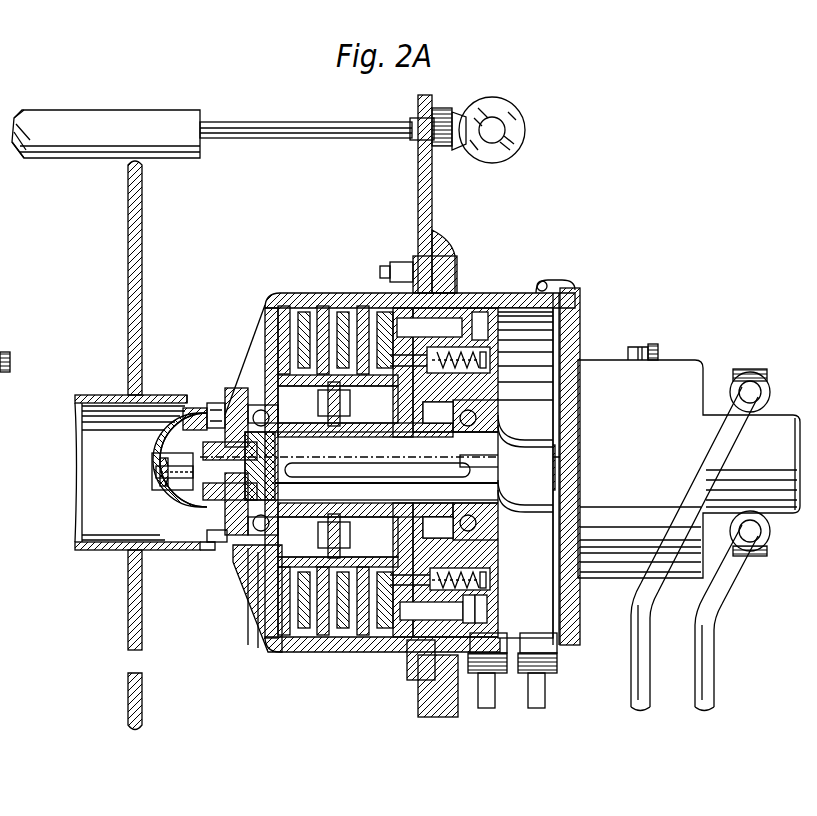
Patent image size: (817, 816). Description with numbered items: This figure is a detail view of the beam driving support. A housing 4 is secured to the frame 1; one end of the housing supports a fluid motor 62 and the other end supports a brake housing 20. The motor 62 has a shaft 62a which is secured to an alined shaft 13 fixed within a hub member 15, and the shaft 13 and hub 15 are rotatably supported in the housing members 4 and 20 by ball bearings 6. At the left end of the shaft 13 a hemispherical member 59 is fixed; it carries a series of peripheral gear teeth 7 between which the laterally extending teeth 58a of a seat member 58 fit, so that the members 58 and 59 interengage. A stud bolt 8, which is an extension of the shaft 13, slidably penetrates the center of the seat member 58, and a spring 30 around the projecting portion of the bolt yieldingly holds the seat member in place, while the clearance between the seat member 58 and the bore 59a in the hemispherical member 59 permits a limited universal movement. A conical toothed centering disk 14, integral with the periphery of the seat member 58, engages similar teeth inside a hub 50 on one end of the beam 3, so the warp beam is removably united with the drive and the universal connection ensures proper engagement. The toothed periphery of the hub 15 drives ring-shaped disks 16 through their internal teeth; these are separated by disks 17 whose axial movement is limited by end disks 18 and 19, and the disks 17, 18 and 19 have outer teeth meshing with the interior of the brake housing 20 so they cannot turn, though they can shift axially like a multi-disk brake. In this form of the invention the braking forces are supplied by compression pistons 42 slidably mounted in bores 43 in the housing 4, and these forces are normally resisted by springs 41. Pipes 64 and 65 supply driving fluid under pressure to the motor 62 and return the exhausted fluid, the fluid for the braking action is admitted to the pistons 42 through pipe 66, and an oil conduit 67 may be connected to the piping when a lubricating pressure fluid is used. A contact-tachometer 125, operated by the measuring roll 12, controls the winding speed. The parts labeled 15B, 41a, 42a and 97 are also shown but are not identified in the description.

The frame 1 is at (410, 708).
The beam 3 is at (82, 552).
The housing 4 is at (488, 292).
The ball bearings 6 is at (258, 410).
The peripheral gear teeth 7 is at (222, 398).
The stud bolt 8 is at (156, 470).
The measuring roll 12 is at (190, 160).
The shaft 13 is at (490, 432).
The conical toothed centering disk 14 is at (196, 560).
The hub member 15 is at (258, 562).
The base block 15B is at (462, 690).
The ring-shaped disks 16 is at (290, 306).
The disks 17 is at (343, 312).
The end disk 18 is at (276, 310).
The end disk 19 is at (392, 283).
The brake housing 20 is at (280, 654).
The spring 30 is at (156, 484).
The springs 41 is at (445, 370).
The spring plunger 41a is at (486, 580).
The compression pistons 42 is at (410, 612).
The piston cap 42a is at (490, 615).
The bores 43 is at (470, 605).
The hub 50 is at (152, 560).
The seat member 58 is at (158, 425).
The laterally extending teeth 58a is at (200, 408).
The hemispherical member 59 is at (196, 412).
The bore 59a is at (152, 460).
The fluid motor 62 is at (680, 372).
The shaft 62a is at (518, 508).
The pipe 64 is at (695, 655).
The pipe 65 is at (631, 655).
The pipe 66 is at (496, 700).
The oil conduit 67 is at (548, 700).
The filler cap 97 is at (628, 356).
The contact-tachometer 125 is at (508, 120).